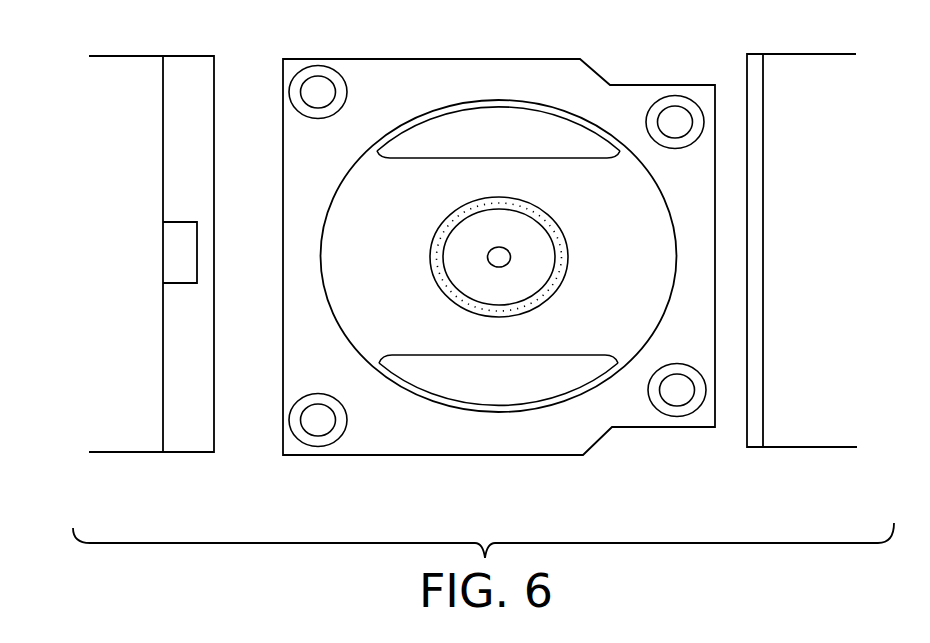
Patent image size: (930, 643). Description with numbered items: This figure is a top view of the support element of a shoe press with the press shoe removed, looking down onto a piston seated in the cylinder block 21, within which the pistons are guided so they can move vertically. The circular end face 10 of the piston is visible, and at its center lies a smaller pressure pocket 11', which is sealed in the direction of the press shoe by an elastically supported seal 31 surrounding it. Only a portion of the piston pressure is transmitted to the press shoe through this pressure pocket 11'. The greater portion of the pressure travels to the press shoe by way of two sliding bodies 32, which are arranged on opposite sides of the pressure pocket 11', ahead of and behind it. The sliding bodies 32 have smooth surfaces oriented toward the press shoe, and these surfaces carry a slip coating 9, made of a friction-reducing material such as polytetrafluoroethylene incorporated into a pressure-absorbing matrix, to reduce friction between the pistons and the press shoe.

The slip coating 9 is at (452, 128).
The sliding bodies 32 is at (540, 127).
The pressure pocket 11' is at (555, 232).
The elastically supported seal 31 is at (565, 275).
The end face 10 is at (355, 307).
The cylinder block 21 is at (370, 425).